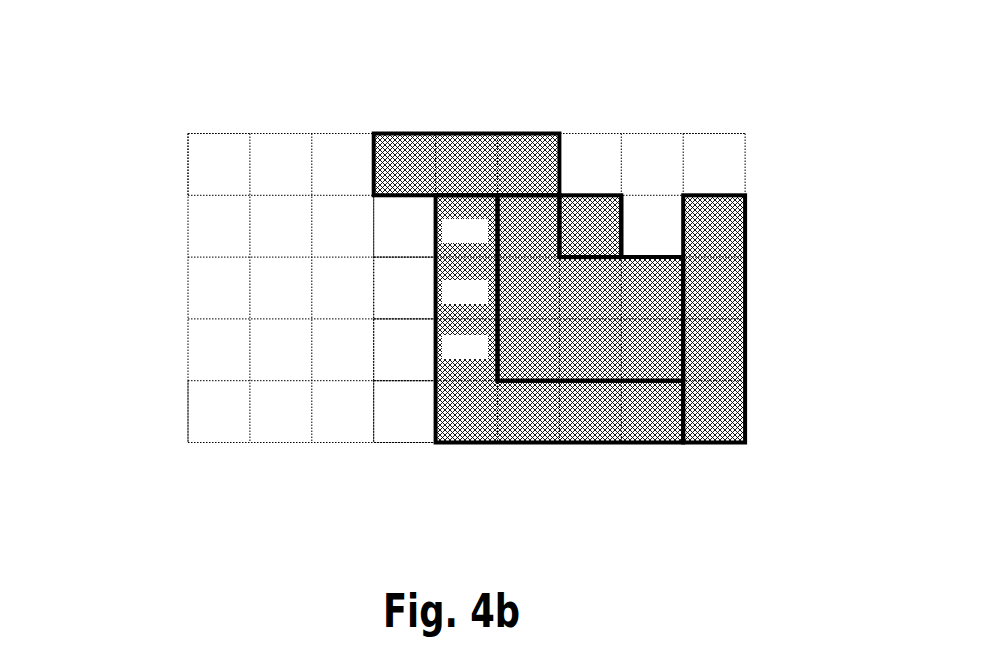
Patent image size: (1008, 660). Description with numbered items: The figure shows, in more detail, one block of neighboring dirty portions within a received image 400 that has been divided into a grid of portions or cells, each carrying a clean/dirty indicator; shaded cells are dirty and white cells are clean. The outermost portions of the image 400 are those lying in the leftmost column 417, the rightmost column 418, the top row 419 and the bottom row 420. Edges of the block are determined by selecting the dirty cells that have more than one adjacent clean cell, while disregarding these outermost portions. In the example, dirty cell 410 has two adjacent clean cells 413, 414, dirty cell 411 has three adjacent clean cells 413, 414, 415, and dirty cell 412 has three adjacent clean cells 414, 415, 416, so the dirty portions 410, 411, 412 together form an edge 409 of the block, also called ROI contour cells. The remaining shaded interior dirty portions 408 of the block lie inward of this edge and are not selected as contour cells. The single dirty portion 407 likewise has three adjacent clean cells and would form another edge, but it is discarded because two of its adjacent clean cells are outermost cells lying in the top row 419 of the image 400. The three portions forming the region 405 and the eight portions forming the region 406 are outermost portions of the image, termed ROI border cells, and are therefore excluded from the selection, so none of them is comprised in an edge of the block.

The received image 400 is at (187, 133).
The region 405 is at (470, 163).
The region 406 is at (730, 408).
The dirty portion 407 is at (587, 220).
The fourth content region 408 is at (590, 317).
The edge 409 is at (467, 368).
The dirty cell 410 is at (484, 241).
The dirty cell 411 is at (484, 302).
The dirty cell 412 is at (484, 357).
The clean cell 413 is at (421, 241).
The clean cell 414 is at (421, 302).
The clean cell 415 is at (421, 357).
The clean cell 416 is at (421, 421).
The leftmost column 417 is at (218, 133).
The rightmost column 418 is at (714, 134).
The top row 419 is at (187, 166).
The bottom row 420 is at (188, 412).